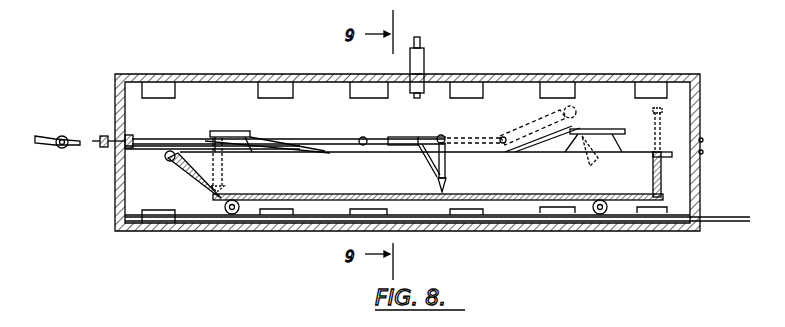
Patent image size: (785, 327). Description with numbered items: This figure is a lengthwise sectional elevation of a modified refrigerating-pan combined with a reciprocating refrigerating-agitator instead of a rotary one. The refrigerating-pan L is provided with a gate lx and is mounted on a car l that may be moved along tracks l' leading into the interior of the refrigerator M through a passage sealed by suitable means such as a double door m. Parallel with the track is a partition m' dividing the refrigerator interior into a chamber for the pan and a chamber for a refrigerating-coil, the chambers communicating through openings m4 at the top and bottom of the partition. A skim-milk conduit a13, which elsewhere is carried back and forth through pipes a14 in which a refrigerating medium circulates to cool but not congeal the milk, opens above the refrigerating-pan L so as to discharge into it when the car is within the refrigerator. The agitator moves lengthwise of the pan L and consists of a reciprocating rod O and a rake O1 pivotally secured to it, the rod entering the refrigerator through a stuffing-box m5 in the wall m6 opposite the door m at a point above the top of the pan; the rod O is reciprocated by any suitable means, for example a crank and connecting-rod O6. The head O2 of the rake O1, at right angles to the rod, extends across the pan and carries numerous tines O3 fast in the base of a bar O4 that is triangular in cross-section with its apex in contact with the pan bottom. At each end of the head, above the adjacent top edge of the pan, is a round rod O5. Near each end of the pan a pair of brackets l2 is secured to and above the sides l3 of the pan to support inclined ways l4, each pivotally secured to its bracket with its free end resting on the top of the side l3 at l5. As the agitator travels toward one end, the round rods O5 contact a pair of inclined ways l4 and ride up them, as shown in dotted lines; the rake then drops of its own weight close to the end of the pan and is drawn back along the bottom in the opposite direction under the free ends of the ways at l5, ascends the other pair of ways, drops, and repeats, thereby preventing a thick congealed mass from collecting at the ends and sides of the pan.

The refrigerator M is at (578, 74).
The double door m is at (712, 151).
The partition m' is at (511, 125).
The openings m4 is at (480, 90).
The stuffing-box m5 is at (104, 150).
The wall m6 is at (120, 126).
The car l is at (190, 175).
The tracks l' is at (437, 236).
The brackets l2 is at (228, 130).
The sides of the pan l3 is at (426, 183).
The inclined ways l4 is at (268, 146).
The free end resting point of way l5 is at (312, 153).
The gate lx is at (661, 150).
The refrigerating-pan L is at (163, 157).
The reciprocating rod O is at (336, 140).
The rake O1 is at (425, 162).
The head of the rake O2 is at (441, 134).
The tines O3 is at (446, 160).
The bar O4 is at (447, 183).
The round rod O5 is at (446, 136).
The crank and connecting-rod O6 is at (44, 135).
The skim-milk conduit a13 is at (413, 40).
The pipes a14 is at (423, 50).